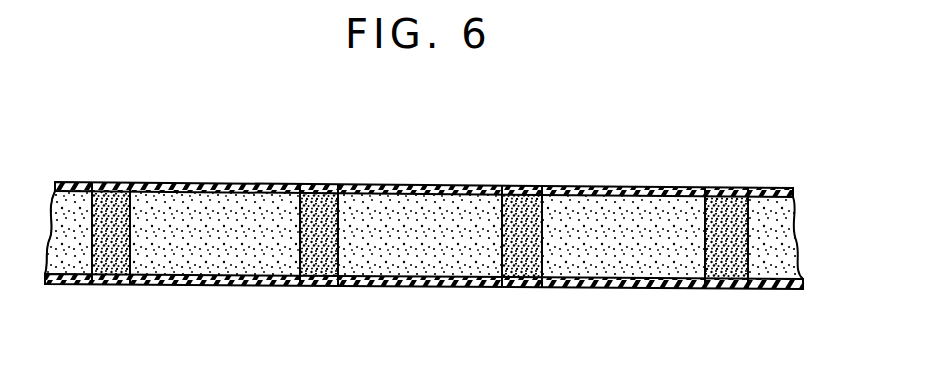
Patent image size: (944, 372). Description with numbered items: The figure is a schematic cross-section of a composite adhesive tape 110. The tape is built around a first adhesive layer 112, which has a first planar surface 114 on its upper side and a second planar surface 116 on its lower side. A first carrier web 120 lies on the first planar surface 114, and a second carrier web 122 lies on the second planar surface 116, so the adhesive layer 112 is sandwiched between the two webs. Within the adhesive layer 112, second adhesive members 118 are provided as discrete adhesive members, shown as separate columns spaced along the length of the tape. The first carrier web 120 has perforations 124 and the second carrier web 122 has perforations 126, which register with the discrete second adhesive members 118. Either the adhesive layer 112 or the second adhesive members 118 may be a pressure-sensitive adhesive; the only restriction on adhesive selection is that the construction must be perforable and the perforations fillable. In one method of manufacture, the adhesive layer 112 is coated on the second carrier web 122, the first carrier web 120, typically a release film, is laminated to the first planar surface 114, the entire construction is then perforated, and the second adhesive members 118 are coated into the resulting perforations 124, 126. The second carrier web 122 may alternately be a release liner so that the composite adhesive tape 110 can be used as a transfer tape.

The composite adhesive tape 110 is at (797, 133).
The first adhesive layer 112 is at (648, 220).
The first planar surface 114 is at (434, 192).
The second planar surface 116 is at (658, 280).
The second adhesive members 118 is at (528, 200).
The first carrier web 120 is at (222, 183).
The second carrier web 122 is at (227, 280).
The perforations 124 is at (88, 181).
The perforations 126 is at (507, 288).